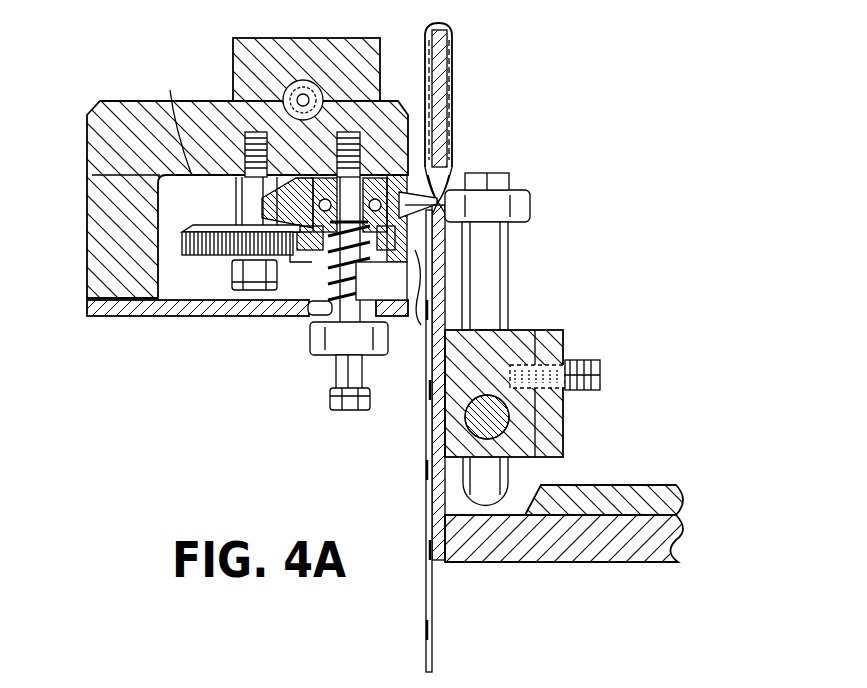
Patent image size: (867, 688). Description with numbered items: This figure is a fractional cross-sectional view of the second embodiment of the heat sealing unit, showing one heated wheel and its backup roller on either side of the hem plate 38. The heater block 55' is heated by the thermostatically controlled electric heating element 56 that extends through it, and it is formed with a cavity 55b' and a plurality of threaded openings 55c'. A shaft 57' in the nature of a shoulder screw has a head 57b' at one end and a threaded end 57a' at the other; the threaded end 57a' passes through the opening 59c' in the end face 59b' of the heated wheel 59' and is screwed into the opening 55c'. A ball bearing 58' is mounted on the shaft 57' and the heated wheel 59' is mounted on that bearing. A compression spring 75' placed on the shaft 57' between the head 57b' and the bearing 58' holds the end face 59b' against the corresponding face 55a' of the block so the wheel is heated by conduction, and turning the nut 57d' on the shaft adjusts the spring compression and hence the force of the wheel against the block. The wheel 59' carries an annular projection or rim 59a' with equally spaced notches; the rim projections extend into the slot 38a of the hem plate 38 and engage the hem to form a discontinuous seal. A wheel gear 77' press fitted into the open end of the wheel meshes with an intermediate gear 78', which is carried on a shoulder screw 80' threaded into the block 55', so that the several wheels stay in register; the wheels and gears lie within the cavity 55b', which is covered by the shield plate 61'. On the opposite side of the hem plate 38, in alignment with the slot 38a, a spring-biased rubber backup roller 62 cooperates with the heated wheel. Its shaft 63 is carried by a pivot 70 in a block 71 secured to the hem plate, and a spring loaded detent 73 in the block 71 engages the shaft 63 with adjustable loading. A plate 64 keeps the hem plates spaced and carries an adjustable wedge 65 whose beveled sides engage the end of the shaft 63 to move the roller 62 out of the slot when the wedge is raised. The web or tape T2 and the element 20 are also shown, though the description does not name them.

The heater block 55' is at (247, 182).
The face of heater block 55a' is at (189, 121).
The cavity 55b' is at (98, 174).
The threaded opening 55c' is at (389, 84).
The electric heating element 56 is at (303, 88).
The shaft 57' is at (336, 253).
The threaded end 57a' is at (386, 201).
The head 57b' is at (319, 384).
The nut 57d' is at (328, 342).
The ball bearing 58' is at (294, 264).
The heated wheel 59' is at (255, 180).
The annular projection or rim 59a' is at (482, 191).
The end face 59b' is at (305, 193).
The opening 59c' is at (374, 191).
The shield plate 61' is at (221, 308).
The backup roller 62 is at (532, 208).
The shaft 63 is at (500, 275).
The plate 64 is at (598, 560).
The adjustable wedge 65 is at (617, 497).
The pivot 70 is at (492, 412).
The block 71 is at (530, 438).
The spring loaded detent 73 is at (580, 390).
The compression spring 75' is at (383, 238).
The wheel gear 77' is at (415, 300).
The intermediate gear 78' is at (230, 228).
The shoulder screw 80' is at (227, 275).
The blade 20 is at (432, 585).
The hem plate 38 is at (442, 115).
The slot 38a is at (438, 173).
The tape T2 is at (450, 78).